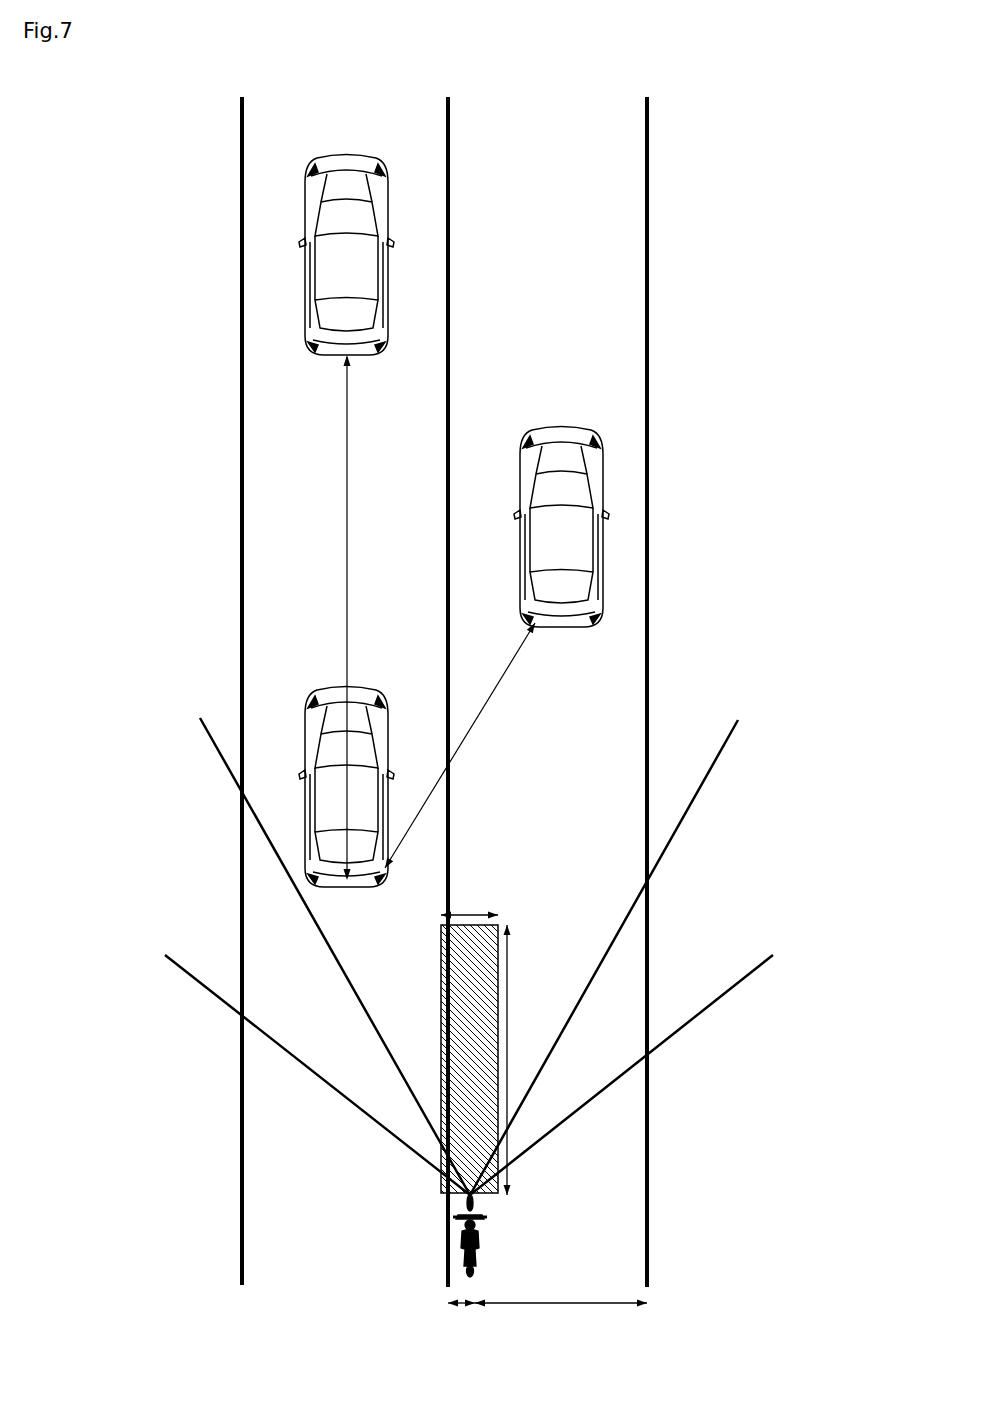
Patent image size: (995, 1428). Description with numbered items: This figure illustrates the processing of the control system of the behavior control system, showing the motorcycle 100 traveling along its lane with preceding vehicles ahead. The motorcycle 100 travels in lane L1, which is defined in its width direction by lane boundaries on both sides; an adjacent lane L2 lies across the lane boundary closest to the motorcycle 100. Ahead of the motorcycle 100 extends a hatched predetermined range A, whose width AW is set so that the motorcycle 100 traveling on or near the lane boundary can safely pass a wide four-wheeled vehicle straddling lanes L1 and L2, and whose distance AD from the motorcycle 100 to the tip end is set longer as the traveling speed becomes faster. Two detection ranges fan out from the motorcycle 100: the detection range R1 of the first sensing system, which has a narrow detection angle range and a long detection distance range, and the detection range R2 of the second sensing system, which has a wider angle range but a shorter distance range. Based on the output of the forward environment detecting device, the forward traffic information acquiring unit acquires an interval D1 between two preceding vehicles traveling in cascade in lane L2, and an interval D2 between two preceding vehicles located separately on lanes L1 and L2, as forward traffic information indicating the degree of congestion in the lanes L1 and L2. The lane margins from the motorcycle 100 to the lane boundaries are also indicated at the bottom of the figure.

The motorcycle 100 is at (453, 1238).
The predetermined range A is at (490, 930).
The width of the predetermined range AW is at (469, 906).
The distance to the tip end of the predetermined range AD is at (522, 1060).
The interval D1 is at (331, 617).
The interval D2 is at (460, 745).
The traveling lane L1 is at (630, 1258).
The lane L2 is at (264, 1258).
The detection range R1 is at (688, 815).
The detection range R2 is at (695, 1022).